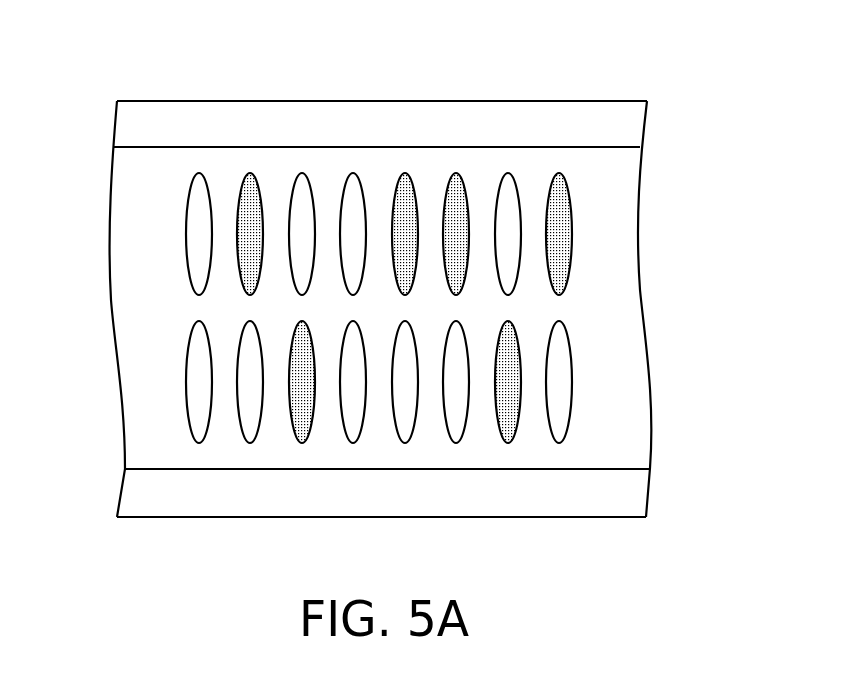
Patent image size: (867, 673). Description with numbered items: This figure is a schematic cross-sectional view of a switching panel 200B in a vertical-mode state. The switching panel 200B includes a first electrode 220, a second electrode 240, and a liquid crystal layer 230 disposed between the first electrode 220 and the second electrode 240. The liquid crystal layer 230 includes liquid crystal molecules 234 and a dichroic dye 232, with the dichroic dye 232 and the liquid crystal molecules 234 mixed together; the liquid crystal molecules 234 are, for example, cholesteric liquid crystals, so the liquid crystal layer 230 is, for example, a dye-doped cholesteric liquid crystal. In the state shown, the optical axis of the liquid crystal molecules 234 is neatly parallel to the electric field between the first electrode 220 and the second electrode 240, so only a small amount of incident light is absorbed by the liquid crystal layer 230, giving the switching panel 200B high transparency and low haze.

The switching panel 200B is at (143, 51).
The first electrode 220 is at (628, 126).
The liquid crystal layer 230 is at (381, 310).
The dichroic dye 232 is at (563, 233).
The liquid crystal molecules 234 is at (562, 387).
The second electrode 240 is at (627, 493).